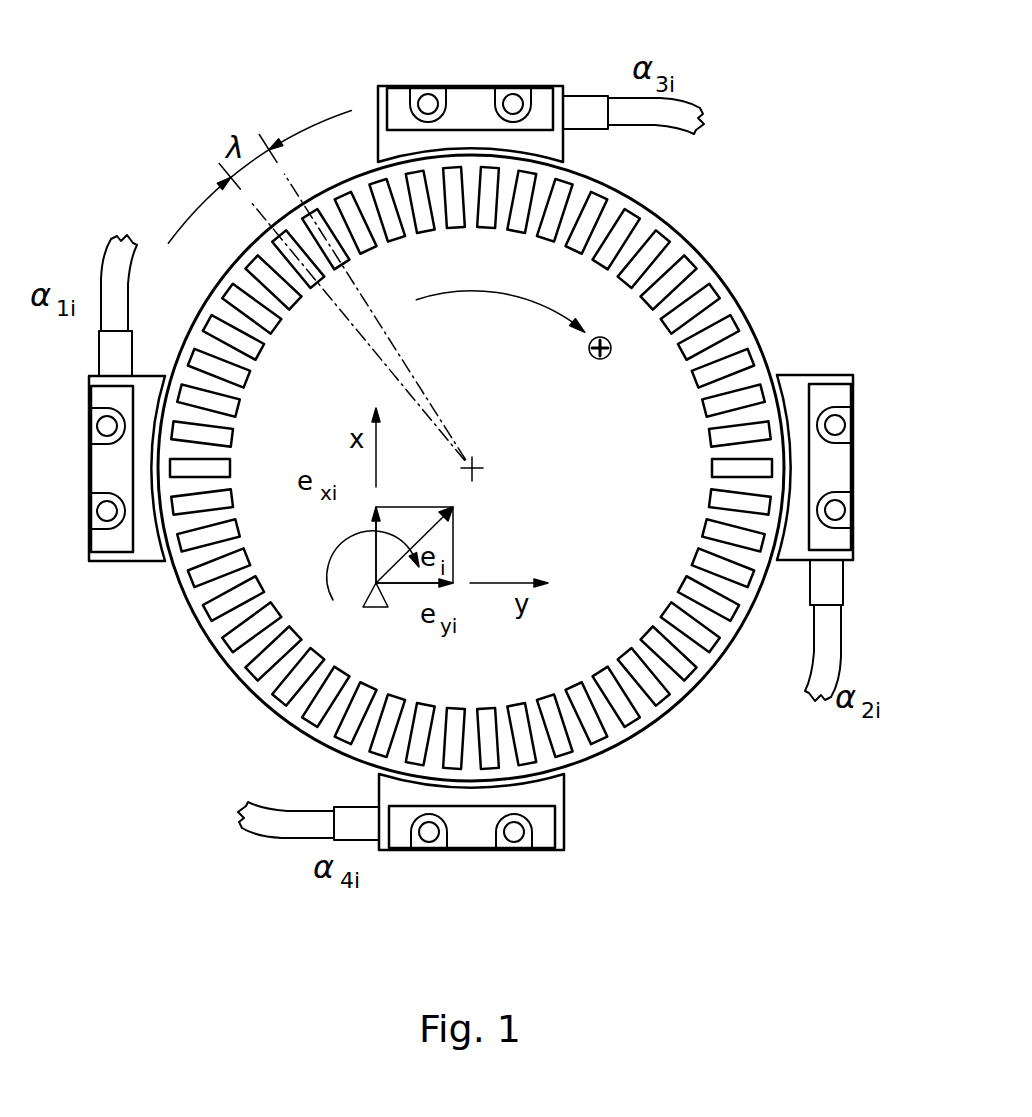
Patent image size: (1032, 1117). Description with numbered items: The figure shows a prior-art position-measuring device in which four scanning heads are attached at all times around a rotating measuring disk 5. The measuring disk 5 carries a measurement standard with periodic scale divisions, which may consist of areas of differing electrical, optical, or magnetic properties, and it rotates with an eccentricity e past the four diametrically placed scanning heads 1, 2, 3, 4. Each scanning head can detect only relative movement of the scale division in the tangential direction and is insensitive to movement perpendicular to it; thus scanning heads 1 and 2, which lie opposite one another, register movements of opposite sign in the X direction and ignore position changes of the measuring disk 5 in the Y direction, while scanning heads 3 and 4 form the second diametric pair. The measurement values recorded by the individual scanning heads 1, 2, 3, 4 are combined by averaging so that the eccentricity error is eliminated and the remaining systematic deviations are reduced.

The scanning head 1 is at (113, 538).
The scanning head 2 is at (823, 478).
The scanning head 3 is at (467, 118).
The scanning head 4 is at (465, 825).
The measuring disk 5 is at (245, 653).